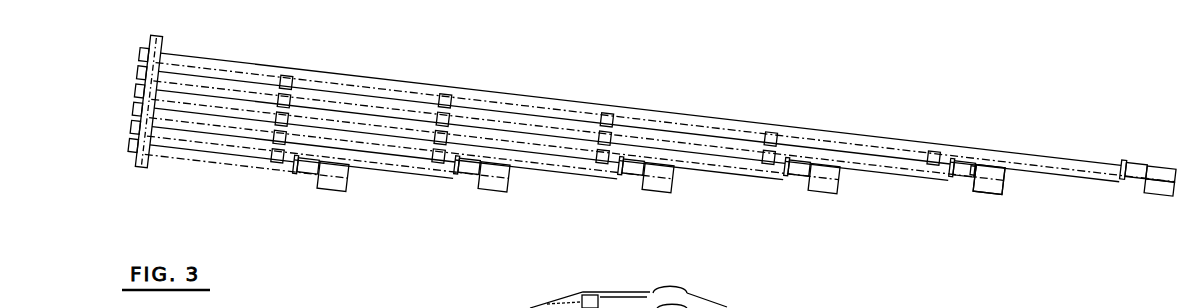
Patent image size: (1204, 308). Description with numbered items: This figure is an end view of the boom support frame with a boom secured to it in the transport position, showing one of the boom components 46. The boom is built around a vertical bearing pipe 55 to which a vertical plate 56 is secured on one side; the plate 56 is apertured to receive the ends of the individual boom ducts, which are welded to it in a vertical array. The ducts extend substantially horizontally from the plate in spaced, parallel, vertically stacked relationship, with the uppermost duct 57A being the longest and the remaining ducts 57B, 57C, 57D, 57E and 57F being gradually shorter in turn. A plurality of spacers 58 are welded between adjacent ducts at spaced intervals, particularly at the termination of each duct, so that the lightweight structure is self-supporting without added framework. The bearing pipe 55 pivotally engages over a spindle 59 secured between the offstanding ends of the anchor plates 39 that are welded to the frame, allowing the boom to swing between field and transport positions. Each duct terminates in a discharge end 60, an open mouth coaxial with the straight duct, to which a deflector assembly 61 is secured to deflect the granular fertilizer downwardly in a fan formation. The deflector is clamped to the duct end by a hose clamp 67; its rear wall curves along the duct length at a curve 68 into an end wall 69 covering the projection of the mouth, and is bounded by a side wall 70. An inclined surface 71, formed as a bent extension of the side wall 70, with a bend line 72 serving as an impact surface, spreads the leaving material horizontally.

The boom components 46 is at (678, 99).
The vertical bearing pipe 55 is at (146, 169).
The vertical plate 56 is at (134, 154).
The uppermost duct 57A is at (858, 144).
The boom duct 57B is at (883, 168).
The boom duct 57C is at (728, 167).
The boom duct 57D is at (553, 165).
The boom duct 57E is at (402, 166).
The boom duct 57F is at (245, 165).
The spacers 58 is at (447, 97).
The discharge ends 60 is at (310, 173).
The deflector assemblies 61 is at (320, 198).
The hose clamp 67 is at (1125, 166).
The curve 68 is at (1135, 179).
The end wall 69 is at (1002, 193).
The side wall 70 is at (1165, 168).
The inclined surface 71 is at (1171, 195).
The bend line 72 is at (1008, 177).
The anchor plates 39 is at (606, 292).
The spindle 59 is at (688, 288).